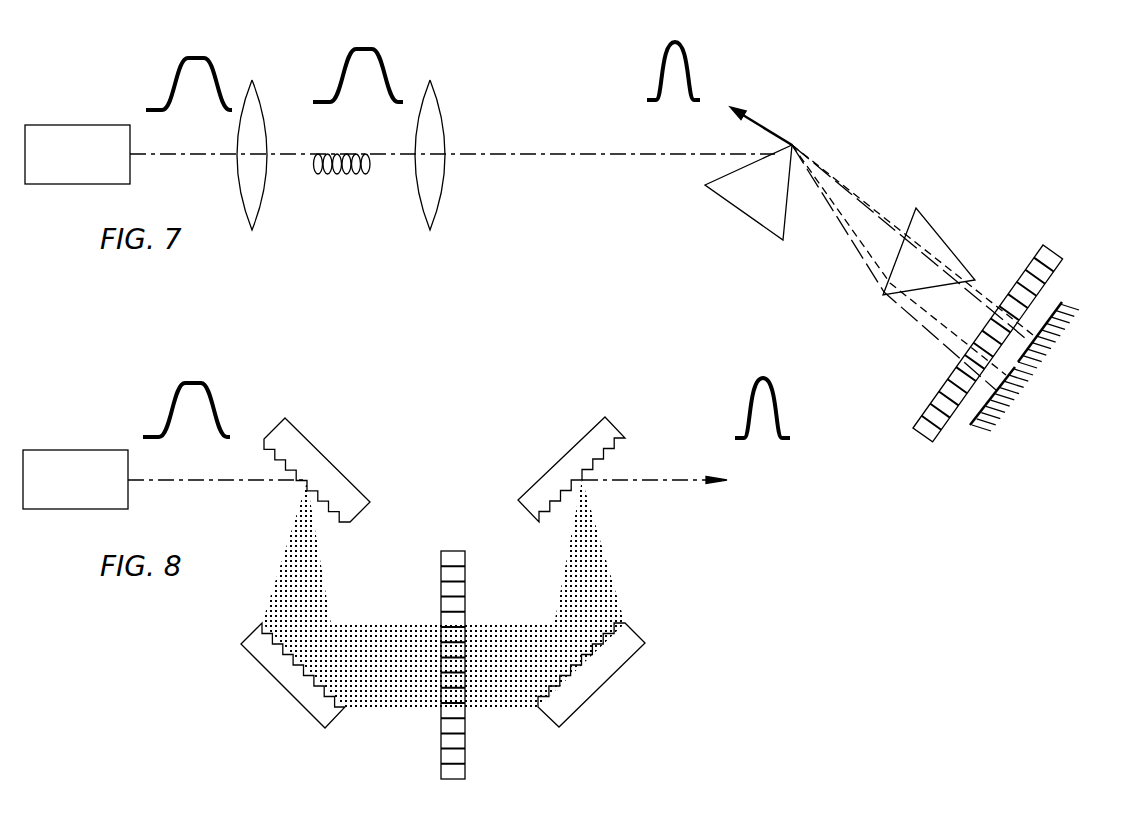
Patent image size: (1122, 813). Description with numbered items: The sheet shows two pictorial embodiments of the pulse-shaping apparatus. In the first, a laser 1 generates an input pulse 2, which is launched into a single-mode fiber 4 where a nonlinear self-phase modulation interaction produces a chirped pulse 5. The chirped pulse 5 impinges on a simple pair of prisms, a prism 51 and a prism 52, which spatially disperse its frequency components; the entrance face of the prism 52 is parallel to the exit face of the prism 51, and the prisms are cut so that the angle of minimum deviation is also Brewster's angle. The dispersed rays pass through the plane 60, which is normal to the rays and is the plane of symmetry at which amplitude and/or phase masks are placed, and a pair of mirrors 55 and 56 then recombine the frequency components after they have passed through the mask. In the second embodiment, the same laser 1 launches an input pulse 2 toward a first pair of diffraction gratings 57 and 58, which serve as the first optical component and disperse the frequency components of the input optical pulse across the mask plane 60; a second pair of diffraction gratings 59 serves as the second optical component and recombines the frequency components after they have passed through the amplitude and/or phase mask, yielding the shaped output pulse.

In FIG. 7, the laser 1 is at (115, 125).
In FIG. 8, the laser 1 is at (113, 450).
In FIG. 7, the input pulse 2 is at (170, 74).
In FIG. 8, the input pulse 2 is at (173, 405).
In FIG. 7, the single-mode fiber 4 is at (345, 175).
In FIG. 7, the chirped pulse 5 is at (343, 72).
In FIG. 7, the prism 51 is at (728, 197).
In FIG. 7, the prism 52 is at (932, 218).
In FIG. 7, the mirror 55 is at (1052, 303).
In FIG. 7, the mirror 56 is at (985, 416).
In FIG. 8, the diffraction grating 57 is at (278, 424).
In FIG. 8, the diffraction grating 58 is at (612, 425).
In FIG. 8, the diffraction gratings 59 is at (250, 632).
In FIG. 7, the plane of symmetry (mask plane) 60 is at (1040, 246).
In FIG. 8, the plane of symmetry (mask plane) 60 is at (457, 551).